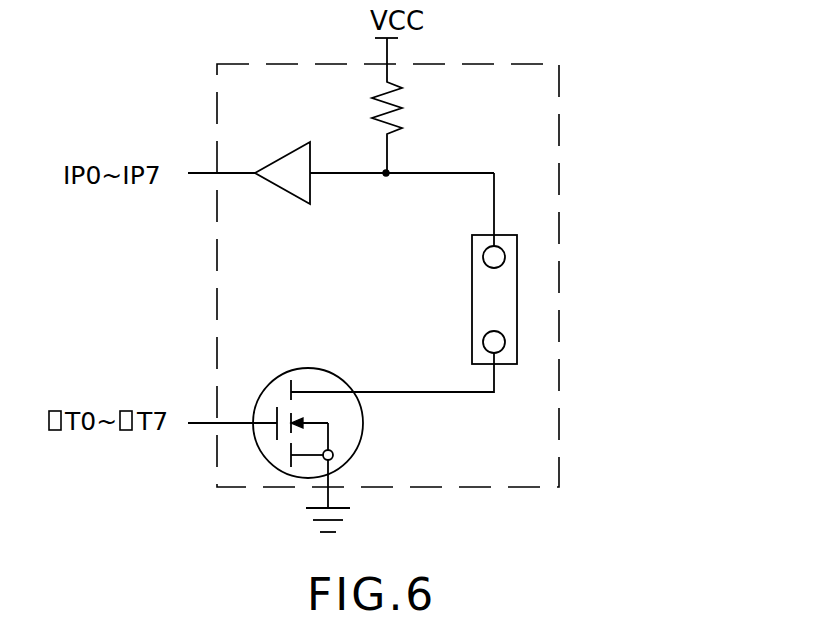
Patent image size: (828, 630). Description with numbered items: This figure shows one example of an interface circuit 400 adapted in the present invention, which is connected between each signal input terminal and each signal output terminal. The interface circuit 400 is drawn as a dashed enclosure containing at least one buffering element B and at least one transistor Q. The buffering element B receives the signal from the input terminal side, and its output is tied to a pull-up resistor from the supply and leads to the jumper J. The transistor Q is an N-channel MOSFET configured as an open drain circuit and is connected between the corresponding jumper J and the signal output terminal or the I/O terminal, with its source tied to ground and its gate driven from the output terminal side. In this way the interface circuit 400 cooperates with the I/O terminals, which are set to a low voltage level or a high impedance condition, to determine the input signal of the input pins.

The interface circuit 400 is at (559, 170).
The buffering element B is at (282, 162).
The jumper J is at (503, 299).
The transistor Q is at (320, 423).